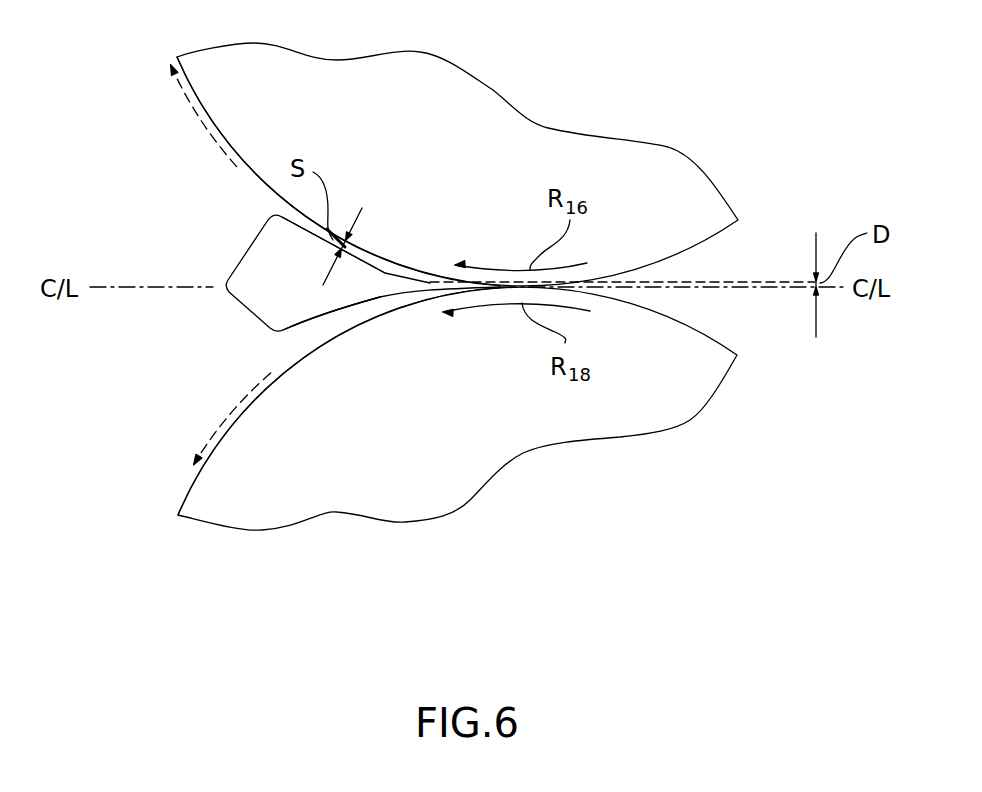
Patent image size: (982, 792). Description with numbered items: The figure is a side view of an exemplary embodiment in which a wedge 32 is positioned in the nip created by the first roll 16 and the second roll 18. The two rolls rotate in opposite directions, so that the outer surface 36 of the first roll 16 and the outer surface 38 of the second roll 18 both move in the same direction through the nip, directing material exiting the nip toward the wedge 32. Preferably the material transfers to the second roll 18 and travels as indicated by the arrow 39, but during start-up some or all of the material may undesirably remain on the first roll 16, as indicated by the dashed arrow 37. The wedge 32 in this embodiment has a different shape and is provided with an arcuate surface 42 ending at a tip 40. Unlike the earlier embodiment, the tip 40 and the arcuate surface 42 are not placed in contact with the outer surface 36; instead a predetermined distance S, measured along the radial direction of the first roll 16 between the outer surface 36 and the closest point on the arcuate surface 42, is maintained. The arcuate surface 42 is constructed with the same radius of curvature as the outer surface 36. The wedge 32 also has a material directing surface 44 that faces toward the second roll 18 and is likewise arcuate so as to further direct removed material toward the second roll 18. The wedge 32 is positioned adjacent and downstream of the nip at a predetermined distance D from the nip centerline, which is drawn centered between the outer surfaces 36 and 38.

The first roll 16 is at (440, 147).
The second roll 18 is at (442, 437).
The wedge 32 is at (289, 267).
The outer surface of first roll 36 is at (263, 181).
The dashed arrow 37 is at (203, 125).
The outer surface of second roll 38 is at (187, 493).
The arrow 39 is at (240, 415).
The tip 40 is at (427, 268).
The arcuate surface 42 is at (320, 244).
The material directing surface 44 is at (303, 323).